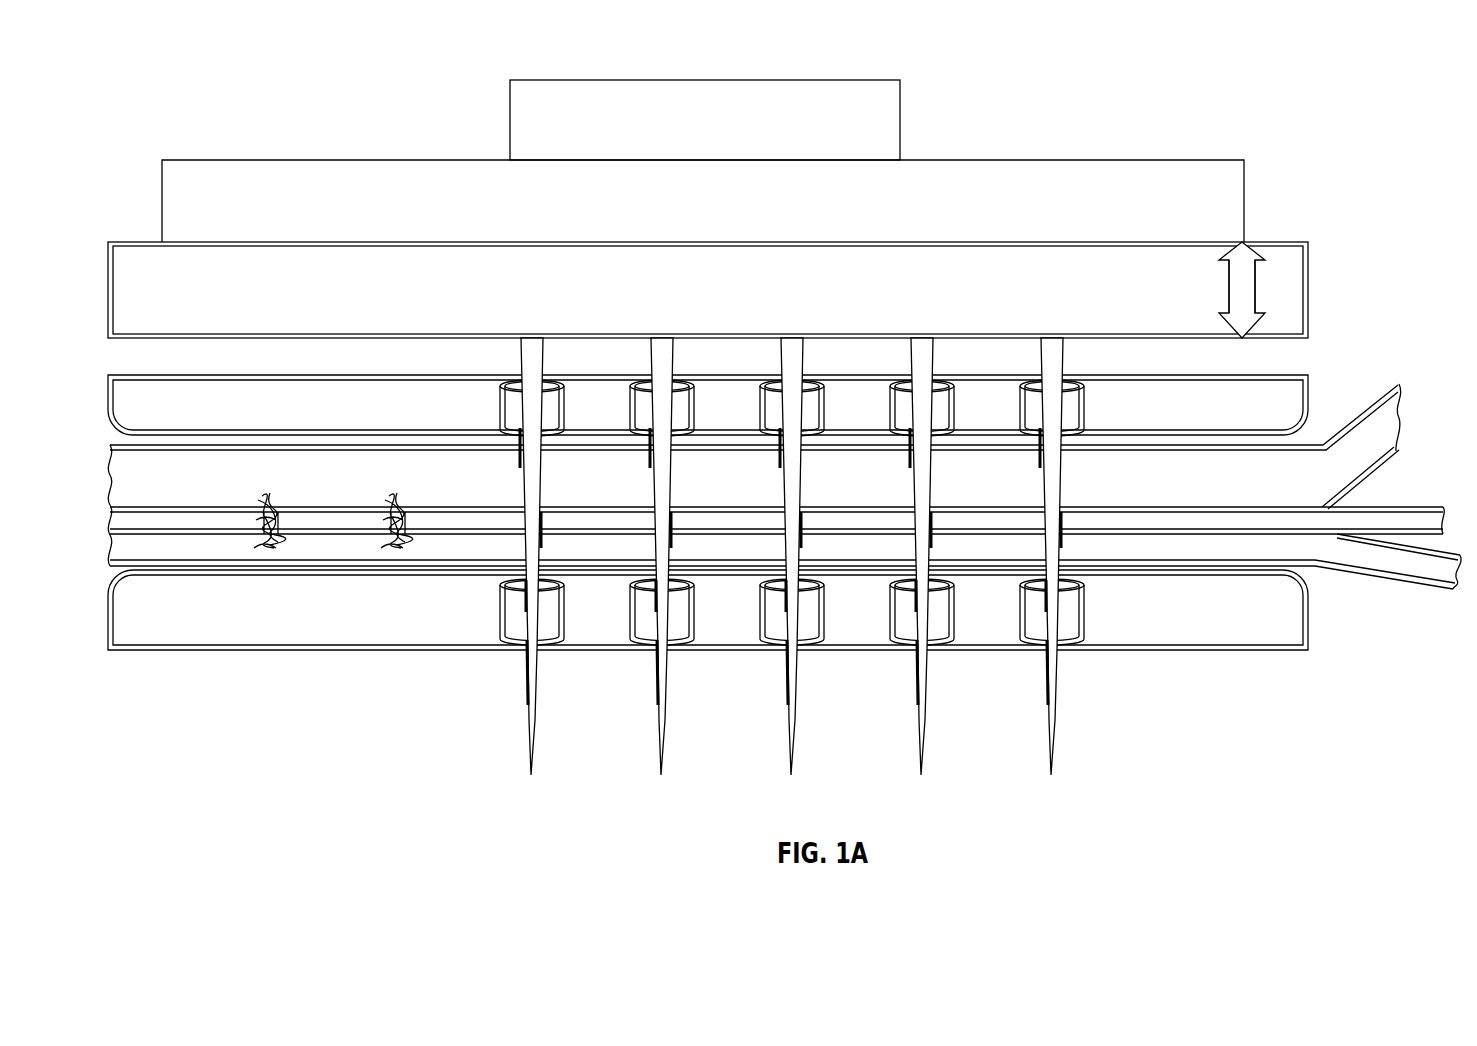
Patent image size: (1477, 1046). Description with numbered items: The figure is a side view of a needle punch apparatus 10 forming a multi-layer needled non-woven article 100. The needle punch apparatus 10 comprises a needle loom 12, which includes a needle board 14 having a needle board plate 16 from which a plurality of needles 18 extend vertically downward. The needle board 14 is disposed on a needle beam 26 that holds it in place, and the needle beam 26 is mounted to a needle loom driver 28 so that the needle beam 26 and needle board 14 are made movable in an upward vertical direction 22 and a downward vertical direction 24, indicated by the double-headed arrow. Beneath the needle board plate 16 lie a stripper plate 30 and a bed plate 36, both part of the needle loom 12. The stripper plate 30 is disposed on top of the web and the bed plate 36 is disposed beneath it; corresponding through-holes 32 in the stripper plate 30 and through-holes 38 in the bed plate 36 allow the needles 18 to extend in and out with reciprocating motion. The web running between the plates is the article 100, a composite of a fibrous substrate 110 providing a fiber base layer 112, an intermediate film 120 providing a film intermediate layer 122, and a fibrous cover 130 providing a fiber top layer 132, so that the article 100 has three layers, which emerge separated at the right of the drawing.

The needle punch apparatus 10 is at (218, 60).
The needle loom 12 is at (310, 665).
The needle board 14 is at (205, 126).
The needle board plate 16 is at (1290, 258).
The needles 18 is at (535, 368).
The upward vertical direction 22 is at (1244, 252).
The downward vertical direction 24 is at (1245, 322).
The needle beam 26 is at (1224, 180).
The needle loom driver 28 is at (878, 95).
The stripper plate 30 is at (1298, 385).
The through-holes 32 is at (512, 400).
The bed plate 36 is at (1300, 630).
The through-holes 38 is at (497, 632).
The multi-layer needled non-woven article 100 is at (1365, 393).
The fibrous substrate 110 is at (265, 442).
The fiber base layer 112 is at (1377, 437).
The intermediate film 120 is at (316, 514).
The film intermediate layer 122 is at (1357, 520).
The fibrous cover 130 is at (291, 570).
The fiber top layer 132 is at (1358, 568).